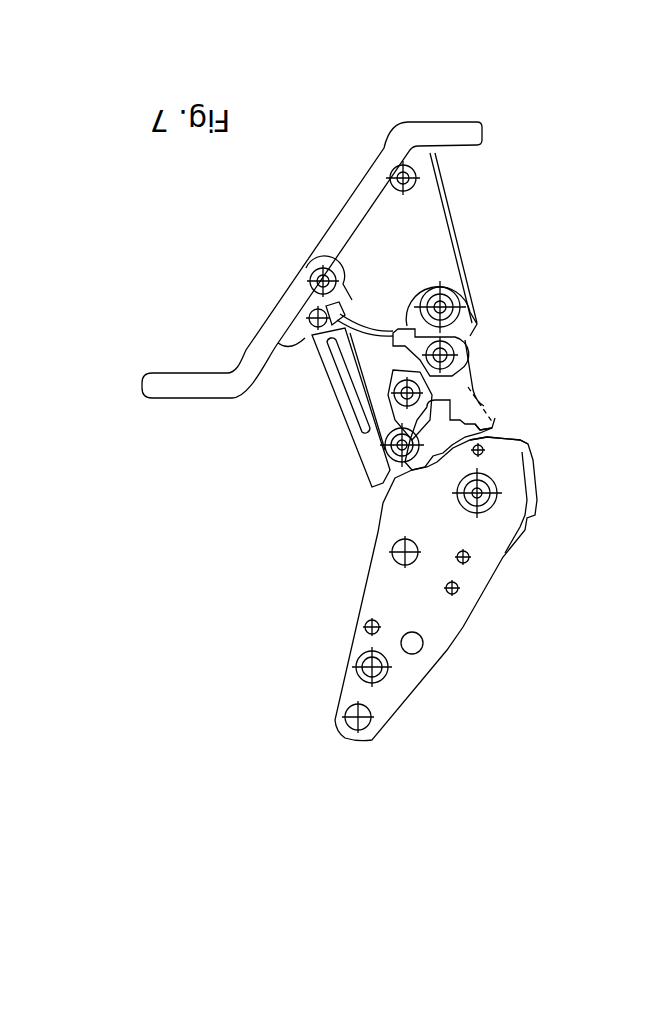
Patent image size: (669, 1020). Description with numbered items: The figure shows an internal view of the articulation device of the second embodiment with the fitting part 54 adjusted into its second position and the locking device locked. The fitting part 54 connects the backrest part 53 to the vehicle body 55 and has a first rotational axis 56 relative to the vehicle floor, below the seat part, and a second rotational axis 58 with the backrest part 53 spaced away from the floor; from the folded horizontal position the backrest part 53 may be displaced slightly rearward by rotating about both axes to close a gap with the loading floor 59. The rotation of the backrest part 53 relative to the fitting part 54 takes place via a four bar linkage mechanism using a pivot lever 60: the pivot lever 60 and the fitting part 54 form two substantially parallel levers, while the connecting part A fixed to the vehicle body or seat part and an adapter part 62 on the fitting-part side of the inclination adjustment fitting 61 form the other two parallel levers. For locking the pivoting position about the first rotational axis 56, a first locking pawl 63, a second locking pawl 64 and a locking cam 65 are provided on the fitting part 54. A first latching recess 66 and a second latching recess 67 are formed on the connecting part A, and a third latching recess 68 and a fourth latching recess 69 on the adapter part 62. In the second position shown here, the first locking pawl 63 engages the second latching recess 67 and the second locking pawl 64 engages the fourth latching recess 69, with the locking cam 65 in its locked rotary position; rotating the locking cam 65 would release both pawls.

The backrest part 53 is at (440, 630).
The fitting part 54 is at (460, 393).
The vehicle body 55 is at (341, 221).
The first rotational axis 56 is at (426, 188).
The second rotational axis 58 is at (504, 477).
The loading floor 59 is at (181, 408).
The pivot lever 60 is at (350, 413).
The inclination adjustment fitting 61 is at (562, 566).
The adapter part 62 is at (383, 503).
The first locking pawl 63 is at (400, 352).
The second locking pawl 64 is at (383, 450).
The locking cam 65 is at (428, 400).
The first latching recess 66 is at (345, 302).
The second latching recess 67 is at (407, 320).
The third latching recess 68 is at (532, 446).
The fourth latching recess 69 is at (482, 421).
The connecting part A is at (422, 237).